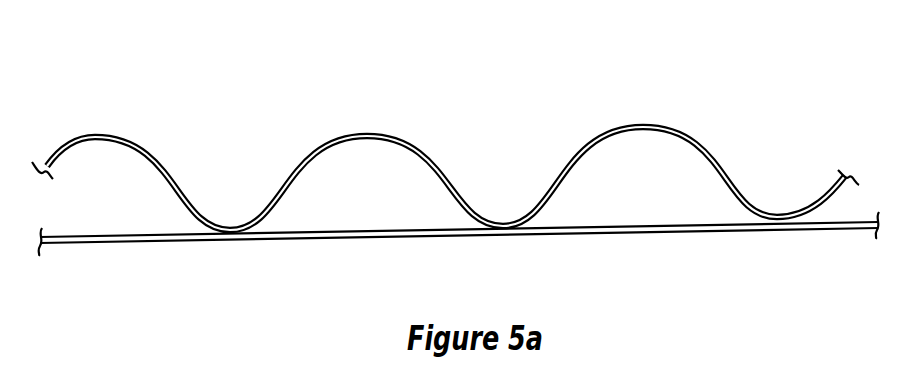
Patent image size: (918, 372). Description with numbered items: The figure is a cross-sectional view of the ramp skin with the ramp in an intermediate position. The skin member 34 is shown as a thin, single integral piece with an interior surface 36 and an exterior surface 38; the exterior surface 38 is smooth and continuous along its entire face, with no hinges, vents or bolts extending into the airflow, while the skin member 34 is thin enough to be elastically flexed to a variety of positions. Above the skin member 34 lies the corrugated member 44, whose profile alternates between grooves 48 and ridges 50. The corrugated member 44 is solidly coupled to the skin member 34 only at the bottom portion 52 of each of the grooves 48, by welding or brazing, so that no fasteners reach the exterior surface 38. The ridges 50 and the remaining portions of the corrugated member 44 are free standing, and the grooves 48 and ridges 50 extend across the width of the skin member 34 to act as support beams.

The skin member 34 is at (864, 226).
The interior surface 36 is at (377, 236).
The exterior surface 38 is at (650, 224).
The corrugated member 44 is at (687, 133).
The grooves 48 is at (231, 162).
The ridges 50 is at (367, 84).
The bottom portion 52 is at (230, 236).